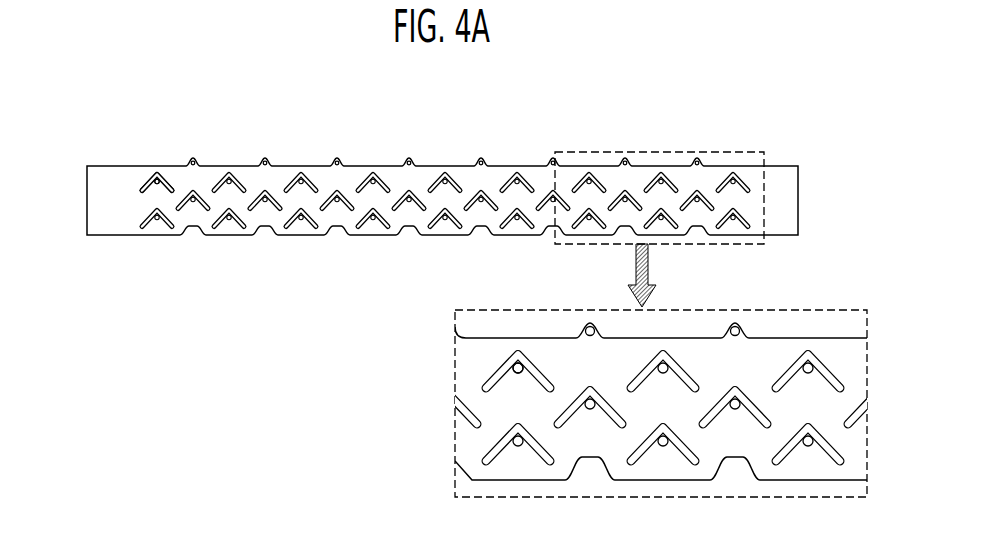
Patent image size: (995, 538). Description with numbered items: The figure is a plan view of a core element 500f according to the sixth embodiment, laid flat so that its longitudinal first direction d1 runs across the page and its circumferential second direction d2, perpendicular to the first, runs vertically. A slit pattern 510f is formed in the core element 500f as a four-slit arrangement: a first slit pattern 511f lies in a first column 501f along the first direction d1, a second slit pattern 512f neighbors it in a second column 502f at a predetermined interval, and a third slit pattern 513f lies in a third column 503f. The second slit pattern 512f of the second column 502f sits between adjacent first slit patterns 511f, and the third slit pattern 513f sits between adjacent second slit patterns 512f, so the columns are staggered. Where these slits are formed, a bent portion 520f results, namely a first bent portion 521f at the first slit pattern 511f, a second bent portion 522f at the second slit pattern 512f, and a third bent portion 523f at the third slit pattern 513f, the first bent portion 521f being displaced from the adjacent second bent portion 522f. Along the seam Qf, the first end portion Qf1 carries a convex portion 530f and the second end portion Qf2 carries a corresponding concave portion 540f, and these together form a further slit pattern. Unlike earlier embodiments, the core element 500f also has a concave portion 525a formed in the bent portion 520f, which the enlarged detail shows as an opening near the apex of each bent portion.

The core element 500f is at (467, 124).
The slit pattern 510f is at (203, 110).
The first slit pattern 511f is at (167, 182).
The second slit pattern 512f is at (183, 196).
The third slit pattern 513f is at (140, 222).
The bent portion 520f is at (340, 286).
The first bent portion 521f is at (224, 218).
The second bent portion 522f is at (268, 205).
The third bent portion 523f is at (303, 215).
The concave portion 525a is at (301, 172).
The convex portion 530f is at (697, 160).
The concave portion 540f is at (698, 238).
The first column 501f is at (751, 180).
The second column 502f is at (715, 200).
The third column 503f is at (751, 218).
The first end portion Qf1 is at (98, 166).
The second end portion Qf2 is at (100, 235).
The seam Qf is at (50, 152).
The first direction d1 is at (73, 350).
The second direction d2 is at (73, 350).